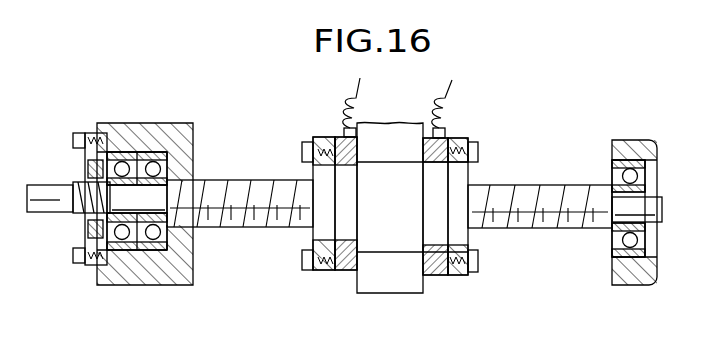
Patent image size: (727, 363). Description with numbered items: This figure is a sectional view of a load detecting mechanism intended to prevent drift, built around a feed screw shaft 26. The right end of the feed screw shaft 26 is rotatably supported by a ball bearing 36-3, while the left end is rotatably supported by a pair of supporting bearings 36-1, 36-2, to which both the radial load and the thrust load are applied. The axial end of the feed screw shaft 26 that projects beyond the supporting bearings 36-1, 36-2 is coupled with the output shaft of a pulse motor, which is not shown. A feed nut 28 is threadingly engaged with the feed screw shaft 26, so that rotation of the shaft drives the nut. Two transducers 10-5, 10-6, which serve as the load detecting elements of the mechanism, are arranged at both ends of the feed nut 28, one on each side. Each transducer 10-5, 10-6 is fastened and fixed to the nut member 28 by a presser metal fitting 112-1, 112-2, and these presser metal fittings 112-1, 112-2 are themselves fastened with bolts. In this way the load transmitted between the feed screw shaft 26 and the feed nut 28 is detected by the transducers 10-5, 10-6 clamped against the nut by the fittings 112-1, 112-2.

The feed screw shaft 26 is at (550, 217).
The feed nut 28 is at (412, 194).
The transducer 10-5 is at (345, 273).
The transducer 10-6 is at (433, 276).
The presser metal fitting 112-1 is at (318, 235).
The presser metal fitting 112-2 is at (470, 273).
The supporting bearing 36-1 is at (120, 252).
The supporting bearing 36-2 is at (153, 245).
The ball bearing 36-3 is at (640, 255).